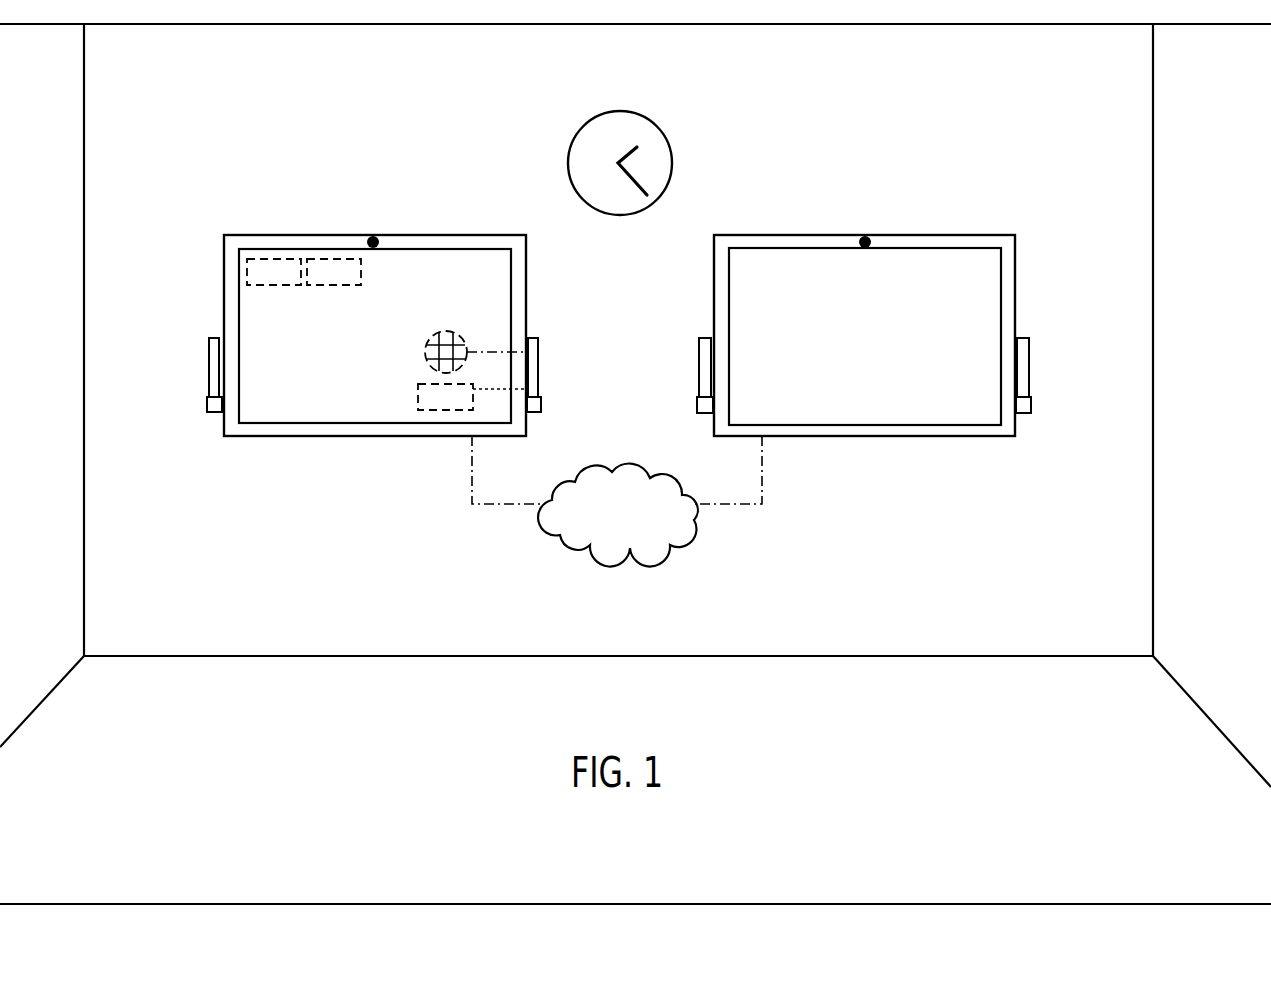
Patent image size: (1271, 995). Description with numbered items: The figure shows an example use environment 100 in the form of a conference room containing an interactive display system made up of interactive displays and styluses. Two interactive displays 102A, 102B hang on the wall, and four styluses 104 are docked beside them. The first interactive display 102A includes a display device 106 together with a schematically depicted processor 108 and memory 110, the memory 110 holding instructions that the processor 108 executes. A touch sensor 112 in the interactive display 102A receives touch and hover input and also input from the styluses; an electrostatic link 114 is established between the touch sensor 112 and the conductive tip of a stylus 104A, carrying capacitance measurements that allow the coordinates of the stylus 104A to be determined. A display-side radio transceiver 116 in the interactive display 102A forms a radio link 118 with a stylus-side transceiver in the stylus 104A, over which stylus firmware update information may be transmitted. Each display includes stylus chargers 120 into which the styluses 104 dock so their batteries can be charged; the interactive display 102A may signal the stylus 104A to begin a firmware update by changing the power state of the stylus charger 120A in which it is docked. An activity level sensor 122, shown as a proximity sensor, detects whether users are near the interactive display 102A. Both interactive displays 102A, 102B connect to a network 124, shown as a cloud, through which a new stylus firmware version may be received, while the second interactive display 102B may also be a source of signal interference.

The use environment 100 is at (617, 78).
The interactive display 102A is at (527, 298).
The interactive display 102B is at (1017, 298).
The stylus 104 is at (209, 360).
The stylus 104A is at (540, 360).
The display device 106 is at (473, 265).
The processor 108 is at (274, 272).
The memory 110 is at (334, 272).
The touch sensor 112 is at (446, 332).
The electrostatic link 114 is at (494, 352).
The display-side radio transceiver 116 is at (445, 397).
The radio link 118 is at (491, 389).
The stylus charger 120 is at (207, 406).
The stylus charger 120A is at (542, 406).
The activity level sensor 122 is at (380, 242).
The network 124 is at (617, 501).